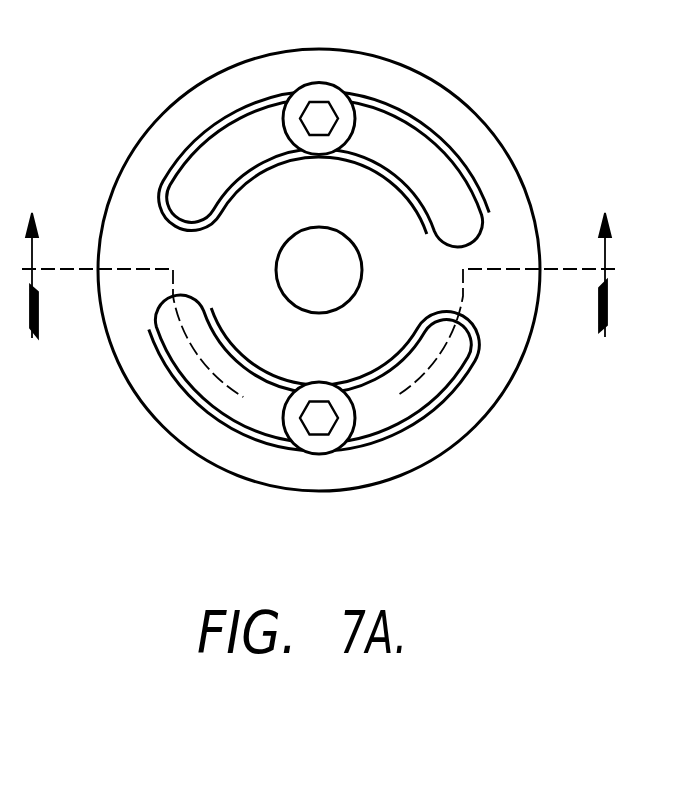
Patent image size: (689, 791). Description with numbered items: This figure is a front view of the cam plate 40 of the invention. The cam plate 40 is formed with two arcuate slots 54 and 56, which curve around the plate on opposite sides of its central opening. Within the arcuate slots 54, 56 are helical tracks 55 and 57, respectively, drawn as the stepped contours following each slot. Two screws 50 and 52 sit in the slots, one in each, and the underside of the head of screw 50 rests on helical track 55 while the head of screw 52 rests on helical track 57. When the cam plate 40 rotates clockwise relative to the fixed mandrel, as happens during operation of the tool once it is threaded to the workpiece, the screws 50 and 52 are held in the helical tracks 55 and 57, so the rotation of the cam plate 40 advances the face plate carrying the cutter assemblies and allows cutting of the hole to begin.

The cam plate 40 is at (160, 427).
The screw 50 is at (320, 93).
The screw 52 is at (320, 445).
The arcuate slot 54 is at (413, 153).
The helical track 55 is at (200, 133).
The arcuate slot 56 is at (377, 410).
The helical track 57 is at (447, 393).